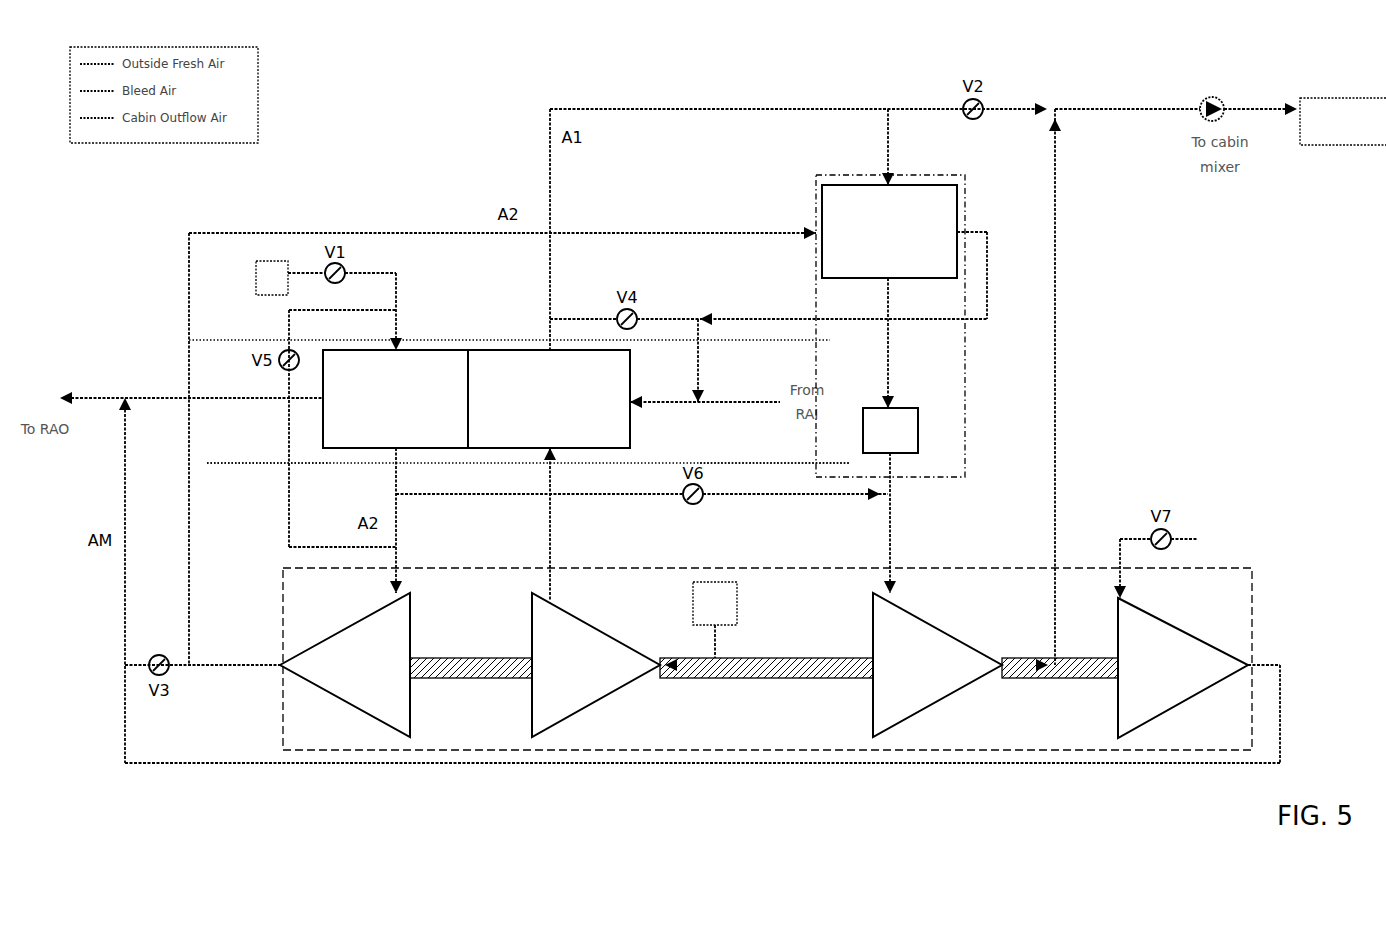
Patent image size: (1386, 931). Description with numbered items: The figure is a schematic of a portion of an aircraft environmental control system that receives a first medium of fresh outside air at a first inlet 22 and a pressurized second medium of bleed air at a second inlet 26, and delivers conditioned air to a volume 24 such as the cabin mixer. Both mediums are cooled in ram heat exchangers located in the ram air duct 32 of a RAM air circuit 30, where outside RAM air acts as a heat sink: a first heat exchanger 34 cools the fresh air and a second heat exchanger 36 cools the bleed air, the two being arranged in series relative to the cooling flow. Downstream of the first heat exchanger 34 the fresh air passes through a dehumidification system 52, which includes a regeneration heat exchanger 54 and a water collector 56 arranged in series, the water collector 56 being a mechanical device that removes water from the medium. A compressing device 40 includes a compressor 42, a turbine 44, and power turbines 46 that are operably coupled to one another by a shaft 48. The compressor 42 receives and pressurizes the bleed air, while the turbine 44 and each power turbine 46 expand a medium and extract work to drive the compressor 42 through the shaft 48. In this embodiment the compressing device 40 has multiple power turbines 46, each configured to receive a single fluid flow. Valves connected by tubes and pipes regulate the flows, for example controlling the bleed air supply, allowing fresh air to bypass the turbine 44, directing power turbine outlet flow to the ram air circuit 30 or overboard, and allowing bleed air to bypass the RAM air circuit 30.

The first inlet 22 is at (718, 600).
The volume 24 is at (1343, 121).
The second inlet 26 is at (265, 280).
The RAM air circuit 30 is at (787, 465).
The ram air duct 32 is at (268, 463).
The first heat exchanger 34 is at (549, 399).
The second heat exchanger 36 is at (395, 399).
The compressing device 40 is at (1032, 763).
The compressor 42 is at (610, 695).
The turbine 44 is at (906, 702).
The power turbine 46 is at (370, 693).
The shaft 48 is at (487, 678).
The dehumidification system 52 is at (968, 362).
The regeneration heat exchanger 54 is at (889, 231).
The water collector 56 is at (918, 432).